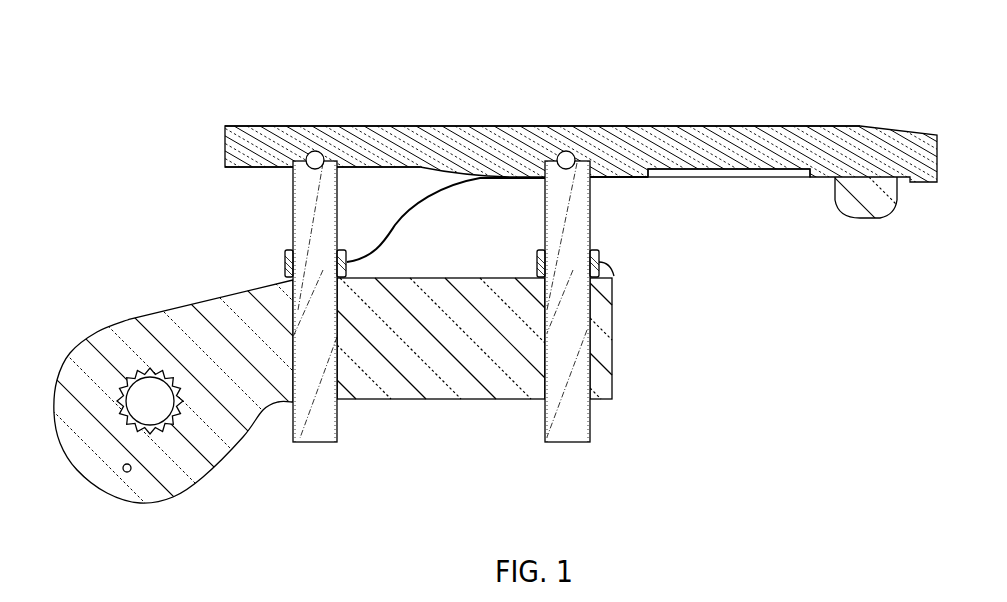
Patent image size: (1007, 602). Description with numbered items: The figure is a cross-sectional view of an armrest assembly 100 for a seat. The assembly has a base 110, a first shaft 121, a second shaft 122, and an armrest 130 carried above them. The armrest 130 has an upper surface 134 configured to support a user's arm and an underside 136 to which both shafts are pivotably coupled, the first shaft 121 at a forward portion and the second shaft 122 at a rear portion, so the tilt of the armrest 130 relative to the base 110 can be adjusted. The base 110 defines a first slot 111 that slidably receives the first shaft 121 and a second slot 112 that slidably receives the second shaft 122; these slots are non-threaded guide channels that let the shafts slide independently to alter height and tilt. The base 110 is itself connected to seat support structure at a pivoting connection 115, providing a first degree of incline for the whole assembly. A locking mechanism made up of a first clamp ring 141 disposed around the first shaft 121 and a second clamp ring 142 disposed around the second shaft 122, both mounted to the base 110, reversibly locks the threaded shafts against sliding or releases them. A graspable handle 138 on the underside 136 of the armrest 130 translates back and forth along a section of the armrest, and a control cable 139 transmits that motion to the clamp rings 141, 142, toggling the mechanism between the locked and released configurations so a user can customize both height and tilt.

The armrest assembly 100 is at (74, 68).
The base 110 is at (425, 388).
The first slot 111 is at (545, 392).
The second slot 112 is at (338, 392).
The pivoting connection 115 is at (152, 417).
The first shaft 121 is at (580, 422).
The second shaft 122 is at (322, 422).
The armrest 130 is at (237, 150).
The upper surface 134 is at (257, 126).
The underside 136 is at (257, 168).
The graspable handle 138 is at (885, 207).
The control cable 139 is at (622, 183).
The first clamp ring 141 is at (537, 262).
The second clamp ring 142 is at (286, 265).